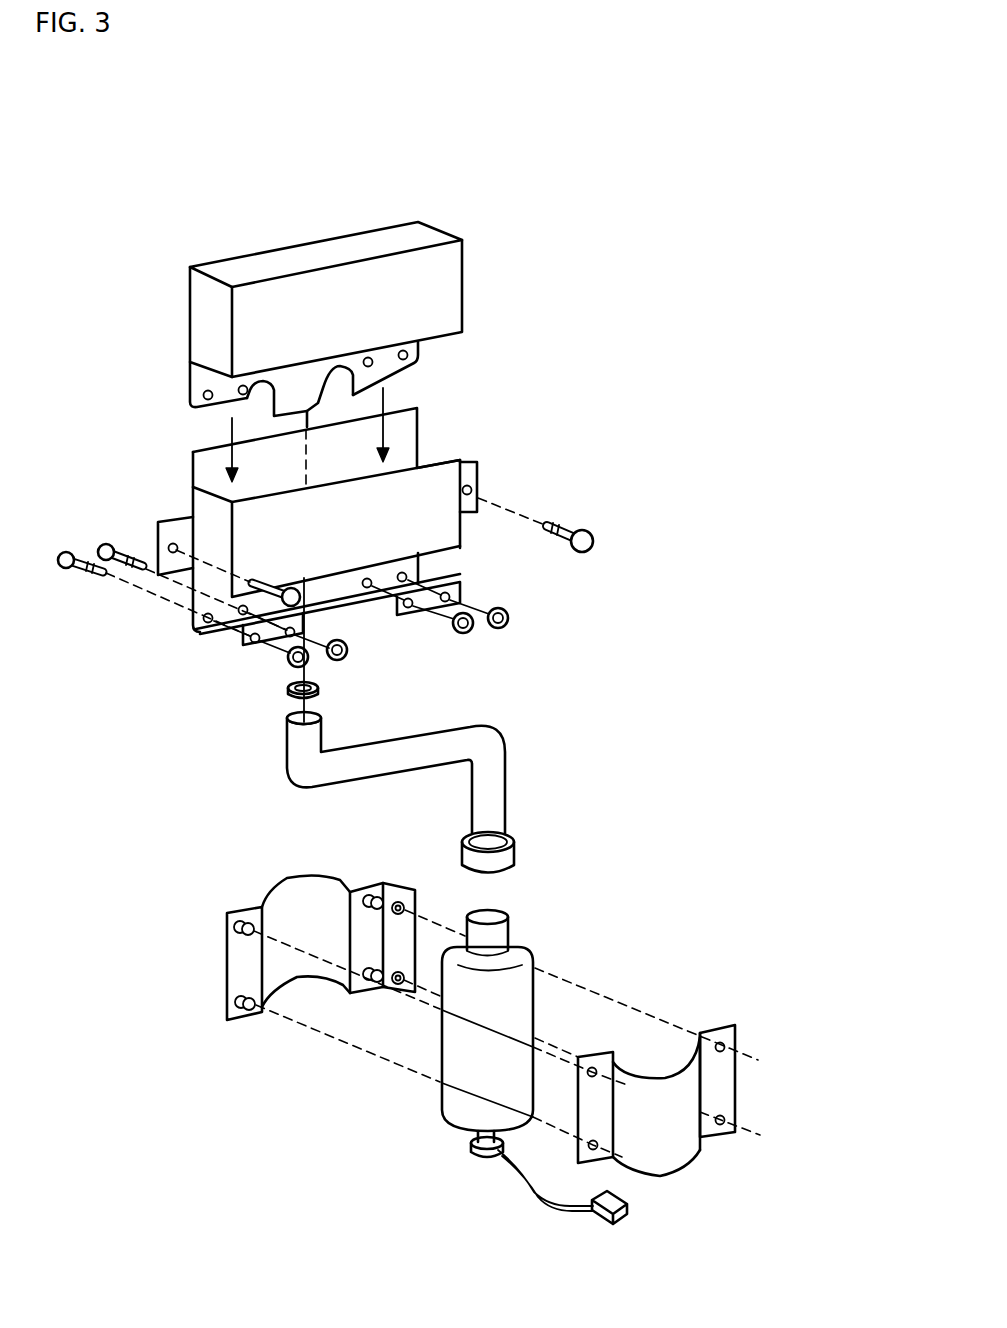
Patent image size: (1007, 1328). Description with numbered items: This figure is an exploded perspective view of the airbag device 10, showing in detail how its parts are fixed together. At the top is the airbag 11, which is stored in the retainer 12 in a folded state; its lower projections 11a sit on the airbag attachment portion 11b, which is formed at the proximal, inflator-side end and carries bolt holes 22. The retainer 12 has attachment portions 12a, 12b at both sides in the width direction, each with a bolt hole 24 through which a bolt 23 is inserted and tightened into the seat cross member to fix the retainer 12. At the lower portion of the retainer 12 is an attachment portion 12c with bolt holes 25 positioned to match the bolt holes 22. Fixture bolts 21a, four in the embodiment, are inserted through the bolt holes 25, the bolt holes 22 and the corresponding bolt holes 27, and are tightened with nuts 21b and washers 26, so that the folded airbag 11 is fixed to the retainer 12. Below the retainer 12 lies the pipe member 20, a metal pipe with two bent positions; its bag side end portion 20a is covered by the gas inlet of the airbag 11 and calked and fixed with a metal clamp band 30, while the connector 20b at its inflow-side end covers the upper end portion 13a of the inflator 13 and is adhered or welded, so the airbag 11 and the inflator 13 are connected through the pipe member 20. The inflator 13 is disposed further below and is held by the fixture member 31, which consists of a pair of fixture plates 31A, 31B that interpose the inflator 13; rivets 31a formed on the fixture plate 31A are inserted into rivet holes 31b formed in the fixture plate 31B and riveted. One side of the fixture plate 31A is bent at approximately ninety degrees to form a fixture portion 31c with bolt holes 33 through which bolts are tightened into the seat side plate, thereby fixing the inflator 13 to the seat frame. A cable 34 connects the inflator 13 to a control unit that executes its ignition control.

The airbag device 10 is at (600, 322).
The airbag 11 is at (321, 232).
The projection 11a is at (327, 357).
The airbag attachment portion 11b is at (200, 377).
The retainer 12 is at (449, 452).
The attachment portion 12a is at (175, 524).
The attachment portion 12b is at (478, 476).
The attachment portion 12c is at (428, 558).
The inflator 13 is at (531, 984).
The upper end portion 13a is at (510, 931).
The pipe member 20 is at (515, 746).
The bag side end portion 20a is at (288, 742).
The connector 20b is at (516, 845).
The fixture bolt 21a is at (105, 544).
The nut 21b is at (340, 660).
The bolt hole 22 is at (205, 399).
The bolt 23 is at (255, 579).
The bolt hole 24 is at (168, 547).
The bolt hole 25 is at (207, 623).
The washers 26 is at (289, 660).
The bolt hole 27 is at (287, 637).
The clamp band 30 is at (287, 697).
The fixture member 31 is at (214, 925).
The fixture plate 31A is at (285, 888).
The fixture plate 31B is at (674, 1153).
The rivet 31a is at (224, 1007).
The rivet hole 31b is at (740, 1128).
The fixture portion 31c is at (392, 887).
The bolt hole 33 is at (396, 992).
The cable 34 is at (538, 1195).